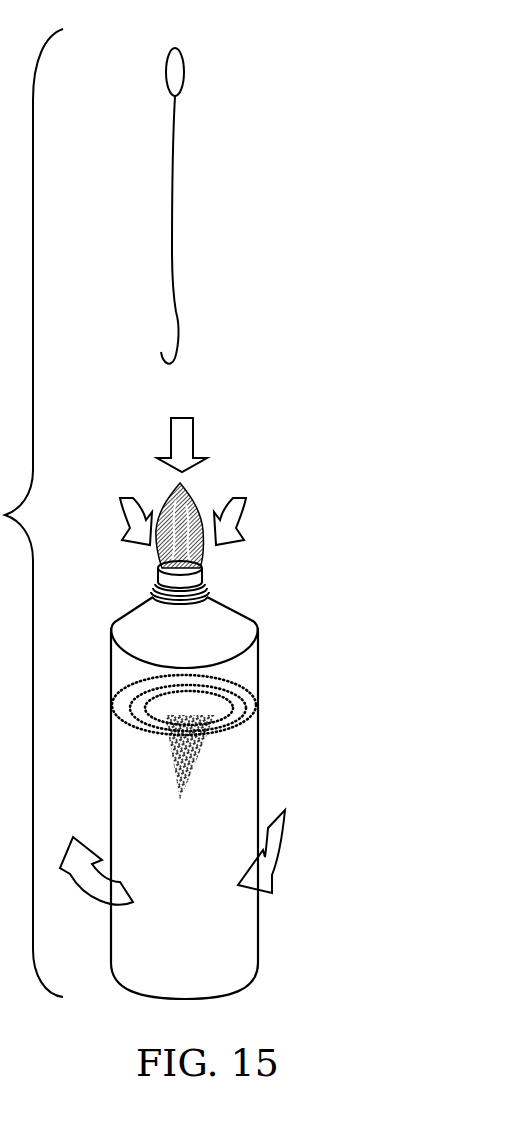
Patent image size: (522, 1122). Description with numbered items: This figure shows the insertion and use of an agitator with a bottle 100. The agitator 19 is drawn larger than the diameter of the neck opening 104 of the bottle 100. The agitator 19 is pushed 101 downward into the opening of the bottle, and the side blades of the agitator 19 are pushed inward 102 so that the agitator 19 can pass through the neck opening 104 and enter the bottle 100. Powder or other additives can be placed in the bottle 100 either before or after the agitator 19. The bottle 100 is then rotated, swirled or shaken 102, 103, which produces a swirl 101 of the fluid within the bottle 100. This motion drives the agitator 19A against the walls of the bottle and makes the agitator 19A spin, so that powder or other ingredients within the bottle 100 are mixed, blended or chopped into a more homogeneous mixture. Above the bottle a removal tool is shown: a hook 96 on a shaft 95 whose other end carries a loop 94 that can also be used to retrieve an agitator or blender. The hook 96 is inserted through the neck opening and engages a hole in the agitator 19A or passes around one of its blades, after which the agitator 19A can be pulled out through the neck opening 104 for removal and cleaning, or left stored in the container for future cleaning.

The loop 94 is at (166, 72).
The shaft 95 is at (173, 251).
The hook 96 is at (178, 327).
The agitator 19 is at (205, 488).
The agitator 19A is at (220, 773).
The bottle 100 is at (287, 665).
The push / swirl 101 is at (168, 443).
The inward push / rotation 102 is at (123, 529).
The rotation arrows 103 is at (108, 912).
The neck opening 104 is at (205, 582).